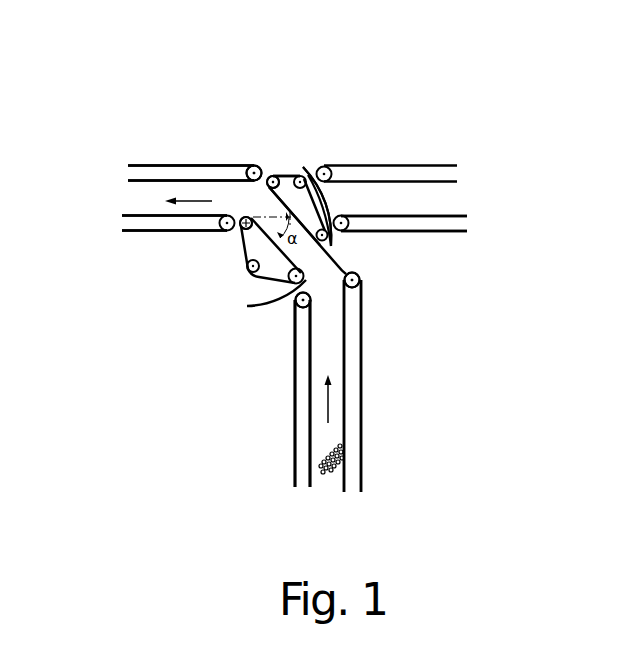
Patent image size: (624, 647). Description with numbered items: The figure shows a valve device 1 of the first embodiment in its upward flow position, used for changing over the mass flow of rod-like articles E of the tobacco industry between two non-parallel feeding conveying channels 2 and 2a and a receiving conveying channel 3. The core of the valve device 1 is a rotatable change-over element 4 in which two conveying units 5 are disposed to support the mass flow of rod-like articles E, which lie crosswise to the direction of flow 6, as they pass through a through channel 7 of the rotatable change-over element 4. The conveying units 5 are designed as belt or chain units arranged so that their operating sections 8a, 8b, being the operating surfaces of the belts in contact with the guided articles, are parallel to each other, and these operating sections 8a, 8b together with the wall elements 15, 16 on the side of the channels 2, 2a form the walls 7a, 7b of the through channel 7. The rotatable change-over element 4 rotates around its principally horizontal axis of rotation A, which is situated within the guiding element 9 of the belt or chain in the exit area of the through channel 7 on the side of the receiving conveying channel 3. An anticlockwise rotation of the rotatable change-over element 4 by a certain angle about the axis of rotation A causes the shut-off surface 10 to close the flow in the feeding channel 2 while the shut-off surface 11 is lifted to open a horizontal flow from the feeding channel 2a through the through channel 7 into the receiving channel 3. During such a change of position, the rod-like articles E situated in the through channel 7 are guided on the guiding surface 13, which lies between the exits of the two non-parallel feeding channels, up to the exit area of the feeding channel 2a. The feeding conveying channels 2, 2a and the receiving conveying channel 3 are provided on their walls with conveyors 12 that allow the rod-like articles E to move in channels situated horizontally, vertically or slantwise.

The valve device 1 is at (236, 128).
The conveying channel 2 is at (332, 427).
The conveying channel 2a is at (442, 209).
The conveying channel 3 is at (146, 189).
The rotatable change-over element 4 is at (266, 136).
The conveying unit 5 is at (294, 152).
The direction of flow 6 is at (328, 397).
The through channel 7 is at (277, 170).
The wall of the through channel 7a is at (308, 206).
The wall of the through channel 7b is at (253, 235).
The operating section 8a is at (308, 170).
The operating section 8b is at (276, 292).
The guiding element 9 is at (241, 218).
The shut-off surface 10 is at (301, 264).
The shut-off surface 11 is at (333, 216).
The conveyor 12 is at (150, 233).
The guiding surface 13 is at (328, 236).
The wall element 15 is at (361, 275).
The wall element 16 is at (304, 278).
The axis of rotation A is at (241, 228).
The rod-like articles E is at (343, 458).